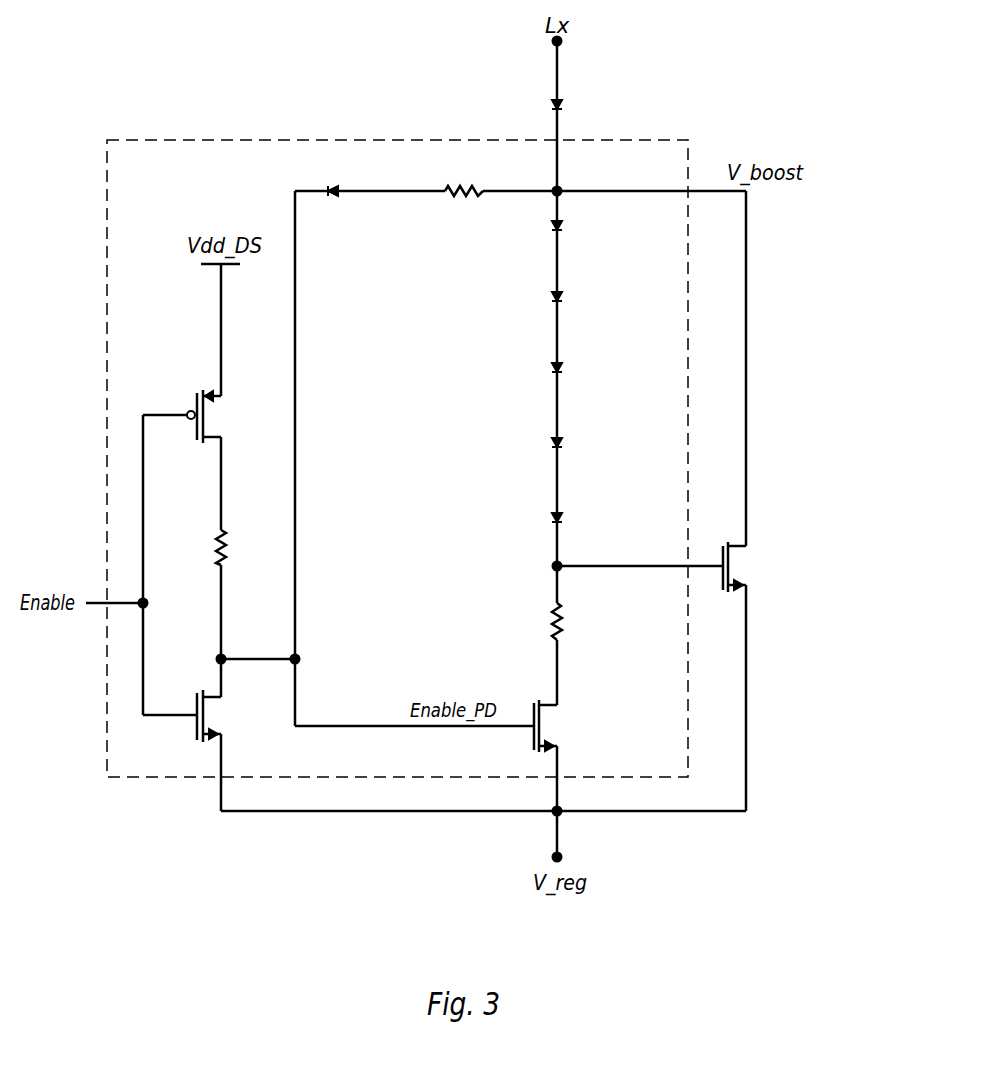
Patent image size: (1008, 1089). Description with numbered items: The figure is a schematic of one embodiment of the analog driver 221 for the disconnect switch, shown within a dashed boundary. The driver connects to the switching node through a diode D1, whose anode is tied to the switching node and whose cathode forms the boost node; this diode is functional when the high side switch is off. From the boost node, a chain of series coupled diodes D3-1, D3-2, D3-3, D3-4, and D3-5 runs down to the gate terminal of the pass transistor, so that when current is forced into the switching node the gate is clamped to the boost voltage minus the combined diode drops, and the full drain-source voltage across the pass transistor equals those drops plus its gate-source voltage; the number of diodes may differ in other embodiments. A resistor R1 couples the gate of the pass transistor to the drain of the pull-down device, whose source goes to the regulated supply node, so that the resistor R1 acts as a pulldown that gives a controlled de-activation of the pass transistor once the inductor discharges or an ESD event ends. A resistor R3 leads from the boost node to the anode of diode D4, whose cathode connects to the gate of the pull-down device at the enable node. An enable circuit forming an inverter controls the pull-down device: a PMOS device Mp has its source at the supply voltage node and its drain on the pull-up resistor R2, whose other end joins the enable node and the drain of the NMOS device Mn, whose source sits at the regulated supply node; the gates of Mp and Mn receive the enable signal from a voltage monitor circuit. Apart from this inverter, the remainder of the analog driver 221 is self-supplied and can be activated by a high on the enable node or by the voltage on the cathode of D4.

The analog driver 221 is at (693, 136).
The diode D1 is at (577, 105).
The diode D4 is at (335, 179).
The series coupled diode D3-1 is at (588, 226).
The series coupled diode D3-2 is at (588, 297).
The series coupled diode D3-3 is at (588, 368).
The series coupled diode D3-4 is at (588, 443).
The series coupled diode D3-5 is at (588, 518).
The resistor R1 is at (575, 621).
The resistor R2 is at (239, 547).
The resistor R3 is at (464, 176).
The PMOS device Mp is at (221, 416).
The NMOS device Mn is at (226, 716).